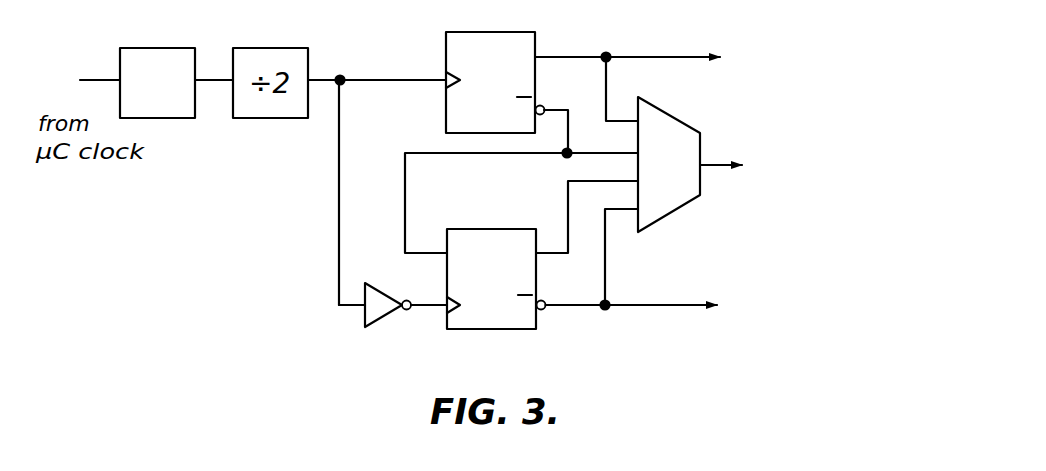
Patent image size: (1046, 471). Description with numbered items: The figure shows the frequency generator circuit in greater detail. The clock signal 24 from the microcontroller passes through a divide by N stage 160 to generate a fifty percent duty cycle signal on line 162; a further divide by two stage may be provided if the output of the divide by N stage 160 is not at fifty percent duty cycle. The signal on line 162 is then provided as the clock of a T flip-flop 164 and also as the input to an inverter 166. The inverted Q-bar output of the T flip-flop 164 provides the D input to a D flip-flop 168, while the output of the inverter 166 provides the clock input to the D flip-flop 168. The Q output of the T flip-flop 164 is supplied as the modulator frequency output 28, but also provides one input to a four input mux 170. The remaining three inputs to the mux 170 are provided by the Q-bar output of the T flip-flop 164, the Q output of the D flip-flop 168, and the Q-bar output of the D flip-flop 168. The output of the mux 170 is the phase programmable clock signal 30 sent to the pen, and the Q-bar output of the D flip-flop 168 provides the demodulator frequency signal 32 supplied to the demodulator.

The clock signal 24 is at (84, 80).
The divide by N stage 160 is at (165, 118).
The line 162 is at (342, 83).
The T flip-flop 164 is at (520, 32).
The inverter 166 is at (375, 321).
The D flip-flop 168 is at (512, 330).
The four input mux 170 is at (672, 207).
The modulator frequency output 28 is at (721, 61).
The phase programmable clock signal 30 is at (794, 166).
The demodulator frequency signal 32 is at (737, 315).